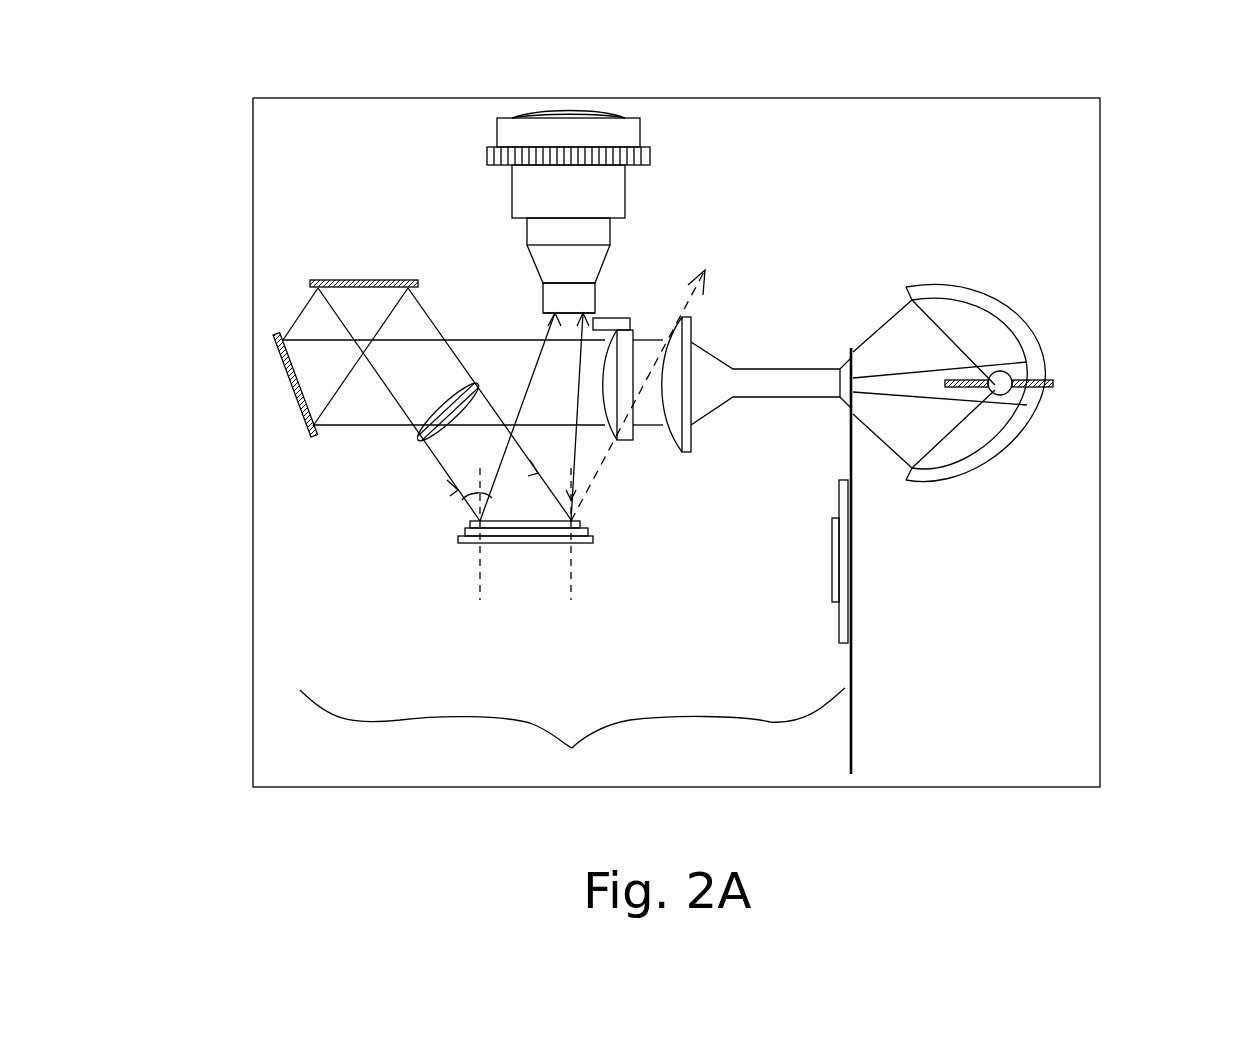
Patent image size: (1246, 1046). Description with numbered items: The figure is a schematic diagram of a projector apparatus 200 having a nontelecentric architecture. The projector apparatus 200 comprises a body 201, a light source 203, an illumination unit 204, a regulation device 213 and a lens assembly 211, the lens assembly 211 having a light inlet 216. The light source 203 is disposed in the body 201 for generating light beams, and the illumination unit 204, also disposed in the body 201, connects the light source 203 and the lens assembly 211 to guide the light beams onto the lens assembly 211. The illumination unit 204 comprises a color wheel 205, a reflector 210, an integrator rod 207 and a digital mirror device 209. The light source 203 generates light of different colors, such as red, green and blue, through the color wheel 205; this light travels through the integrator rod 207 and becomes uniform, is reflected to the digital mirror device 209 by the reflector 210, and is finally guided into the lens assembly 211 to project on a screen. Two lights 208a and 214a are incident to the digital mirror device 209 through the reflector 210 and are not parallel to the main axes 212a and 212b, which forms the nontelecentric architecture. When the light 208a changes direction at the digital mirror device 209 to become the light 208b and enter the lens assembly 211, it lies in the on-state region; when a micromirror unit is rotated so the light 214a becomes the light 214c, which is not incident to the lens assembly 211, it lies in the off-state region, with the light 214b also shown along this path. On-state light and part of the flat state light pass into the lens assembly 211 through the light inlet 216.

The projector apparatus 200 is at (1096, 40).
The body 201 is at (1100, 132).
The light source 203 is at (1012, 395).
The illumination unit 204 is at (572, 736).
The color wheel 205 is at (851, 690).
The integrator rod 207 is at (795, 375).
The light 208a is at (432, 458).
The light 208b is at (475, 494).
The digital mirror device 209 is at (520, 545).
The reflector 210 is at (313, 274).
The lens assembly 211 is at (612, 232).
The main axis 212a is at (480, 572).
The main axis 212b is at (571, 572).
The regulation device 213 is at (612, 318).
The light 214a is at (433, 320).
The second light beam 214b is at (590, 483).
The light 214c is at (690, 302).
The light inlet 216 is at (542, 314).